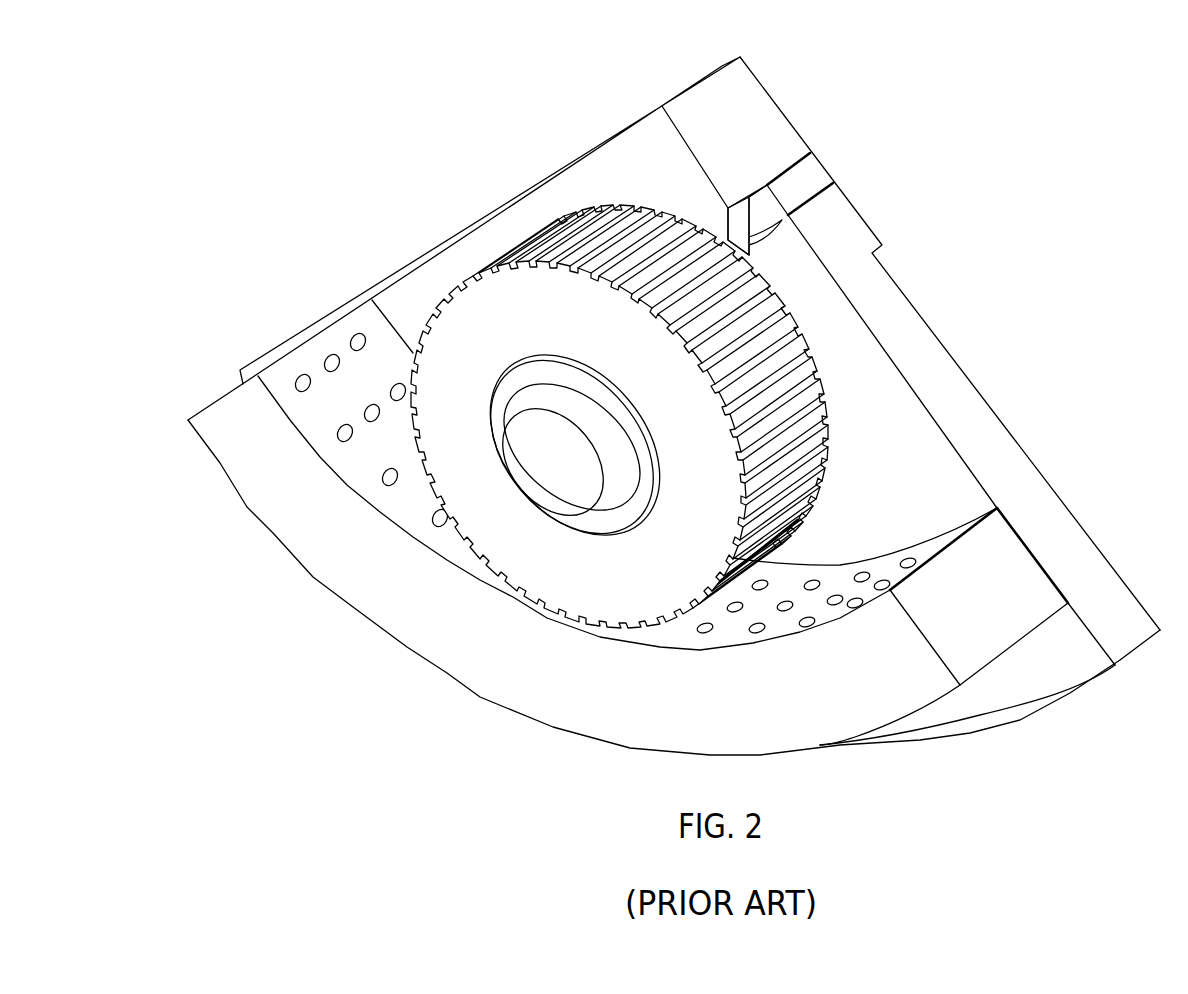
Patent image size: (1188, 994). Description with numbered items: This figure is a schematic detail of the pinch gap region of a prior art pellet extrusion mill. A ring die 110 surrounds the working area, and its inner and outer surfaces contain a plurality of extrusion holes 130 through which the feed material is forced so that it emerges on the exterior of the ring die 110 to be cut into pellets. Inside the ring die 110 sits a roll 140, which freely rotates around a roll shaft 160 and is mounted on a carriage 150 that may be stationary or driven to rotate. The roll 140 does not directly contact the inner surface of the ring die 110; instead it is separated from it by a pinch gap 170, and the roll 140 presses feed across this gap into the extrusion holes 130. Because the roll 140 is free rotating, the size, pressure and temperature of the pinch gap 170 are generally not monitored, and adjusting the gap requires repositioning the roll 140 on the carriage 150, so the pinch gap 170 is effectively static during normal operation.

The ring die 110 is at (711, 711).
The extrusion holes 130 is at (300, 378).
The roll 140 is at (573, 493).
The carriage 150 is at (650, 153).
The roll shaft 160 is at (572, 471).
The pinch gap 170 is at (562, 621).